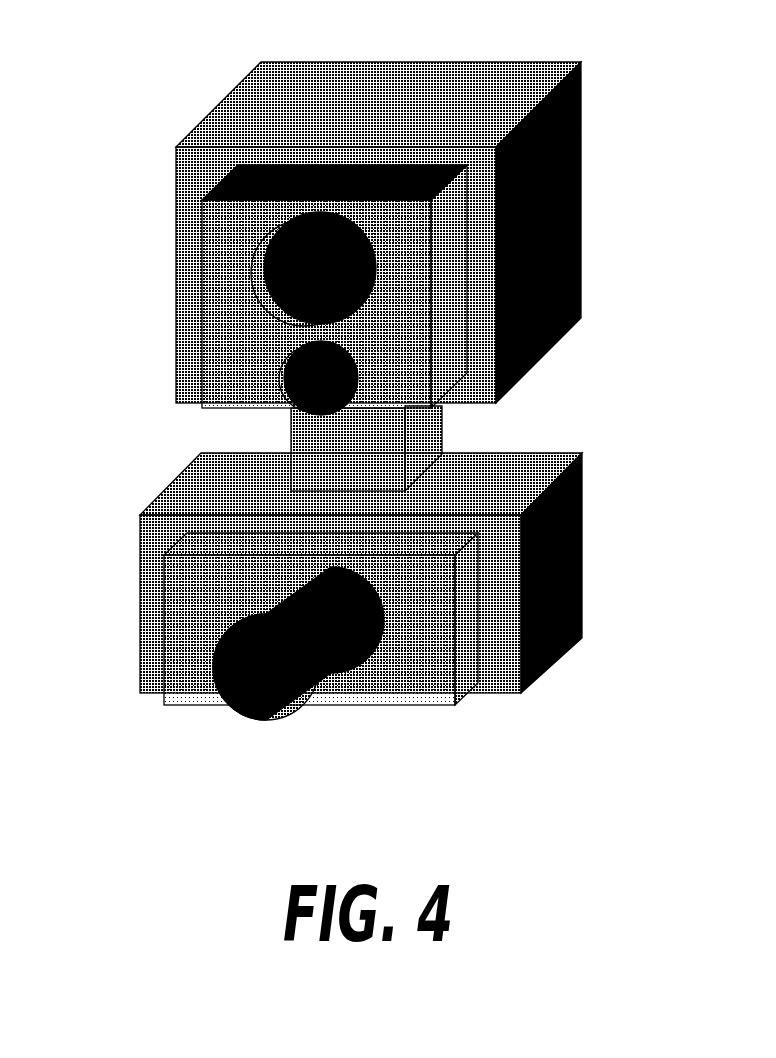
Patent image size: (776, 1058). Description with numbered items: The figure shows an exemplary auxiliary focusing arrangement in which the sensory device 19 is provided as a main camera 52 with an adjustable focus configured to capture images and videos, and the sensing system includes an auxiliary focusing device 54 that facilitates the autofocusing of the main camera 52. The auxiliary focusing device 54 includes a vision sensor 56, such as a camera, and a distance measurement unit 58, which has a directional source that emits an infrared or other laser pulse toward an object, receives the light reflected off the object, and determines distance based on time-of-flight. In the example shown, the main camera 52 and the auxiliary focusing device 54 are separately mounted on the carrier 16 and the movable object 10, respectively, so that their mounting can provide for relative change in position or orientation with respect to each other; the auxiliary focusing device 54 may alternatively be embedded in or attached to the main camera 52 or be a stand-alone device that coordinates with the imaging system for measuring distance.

The movable object 10 is at (397, 422).
The carrier 16 is at (443, 636).
The sensory device 19 is at (423, 684).
The main camera 52 is at (249, 730).
The auxiliary focusing device 54 is at (364, 290).
The vision sensor 56 is at (305, 270).
The distance measurement unit 58 is at (305, 372).